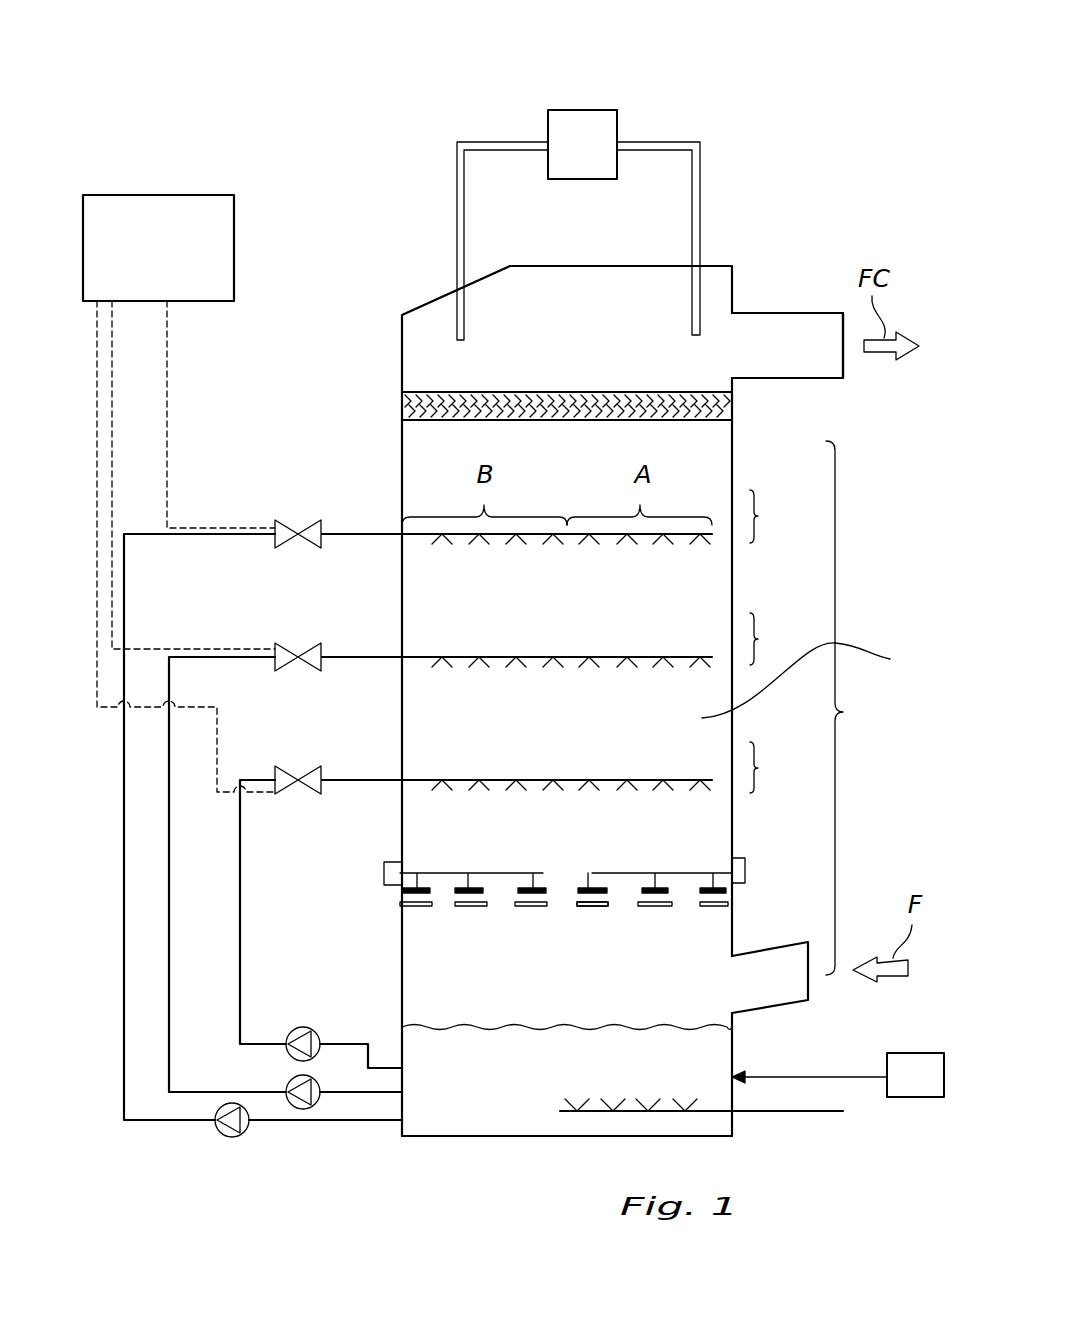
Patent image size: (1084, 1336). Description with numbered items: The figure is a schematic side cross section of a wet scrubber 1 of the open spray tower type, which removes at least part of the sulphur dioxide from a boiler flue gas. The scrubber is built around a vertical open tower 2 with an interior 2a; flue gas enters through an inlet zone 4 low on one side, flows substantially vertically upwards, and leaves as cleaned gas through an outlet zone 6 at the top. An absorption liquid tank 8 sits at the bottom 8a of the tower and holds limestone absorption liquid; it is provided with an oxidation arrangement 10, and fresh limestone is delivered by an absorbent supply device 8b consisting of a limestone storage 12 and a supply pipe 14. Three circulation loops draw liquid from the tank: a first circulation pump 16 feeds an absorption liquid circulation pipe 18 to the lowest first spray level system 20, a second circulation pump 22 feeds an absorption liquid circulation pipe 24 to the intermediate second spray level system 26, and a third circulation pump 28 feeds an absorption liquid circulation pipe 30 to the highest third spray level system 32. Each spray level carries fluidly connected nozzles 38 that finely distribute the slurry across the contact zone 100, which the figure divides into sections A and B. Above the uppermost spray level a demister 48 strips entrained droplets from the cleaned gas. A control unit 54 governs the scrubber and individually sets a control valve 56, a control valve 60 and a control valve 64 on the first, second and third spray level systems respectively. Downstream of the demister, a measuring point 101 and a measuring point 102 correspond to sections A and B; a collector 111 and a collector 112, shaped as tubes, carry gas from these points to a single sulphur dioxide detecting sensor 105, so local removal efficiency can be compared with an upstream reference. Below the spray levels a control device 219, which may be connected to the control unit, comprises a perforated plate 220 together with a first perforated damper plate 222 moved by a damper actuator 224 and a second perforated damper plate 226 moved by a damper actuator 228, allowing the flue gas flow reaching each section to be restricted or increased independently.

The wet scrubber 1 is at (757, 243).
The vertical open tower 2 is at (733, 830).
The interior 2a is at (813, 679).
The inlet zone 4 is at (785, 958).
The outlet zone 6 is at (801, 332).
The absorption liquid tank 8 is at (732, 1093).
The bottom 8a is at (515, 1137).
The absorbent supply device 8b is at (895, 1107).
The oxidation arrangement 10 is at (797, 1112).
The limestone storage 12 is at (925, 1053).
The supply pipe 14 is at (847, 1073).
The first circulation pump 16 is at (308, 1027).
The absorption liquid circulation pipe 18 is at (240, 913).
The first spray level system 20 is at (779, 767).
The second circulation pump 22 is at (288, 1088).
The absorption liquid circulation pipe 24 is at (169, 877).
The second spray level system 26 is at (779, 639).
The third circulation pump 28 is at (223, 1135).
The absorption liquid circulation pipe 30 is at (124, 857).
The third spray level system 32 is at (779, 516).
The nozzles 38 is at (697, 538).
The demister 48 is at (610, 392).
The control unit 54 is at (234, 248).
The control valve 56 is at (287, 793).
The control valve 60 is at (275, 663).
The control valve 64 is at (322, 538).
The contact zone 100 is at (866, 708).
The measuring point 101 is at (693, 343).
The measuring point 102 is at (457, 352).
The sulphur dioxide detecting sensor 105 is at (590, 128).
The collector 111 is at (695, 223).
The collector 112 is at (458, 195).
The control device 219 is at (523, 908).
The perforated plate 220 is at (593, 907).
The first perforated damper plate 222 is at (543, 888).
The damper actuator 224 is at (384, 877).
The second perforated damper plate 226 is at (657, 885).
The damper actuator 228 is at (745, 863).